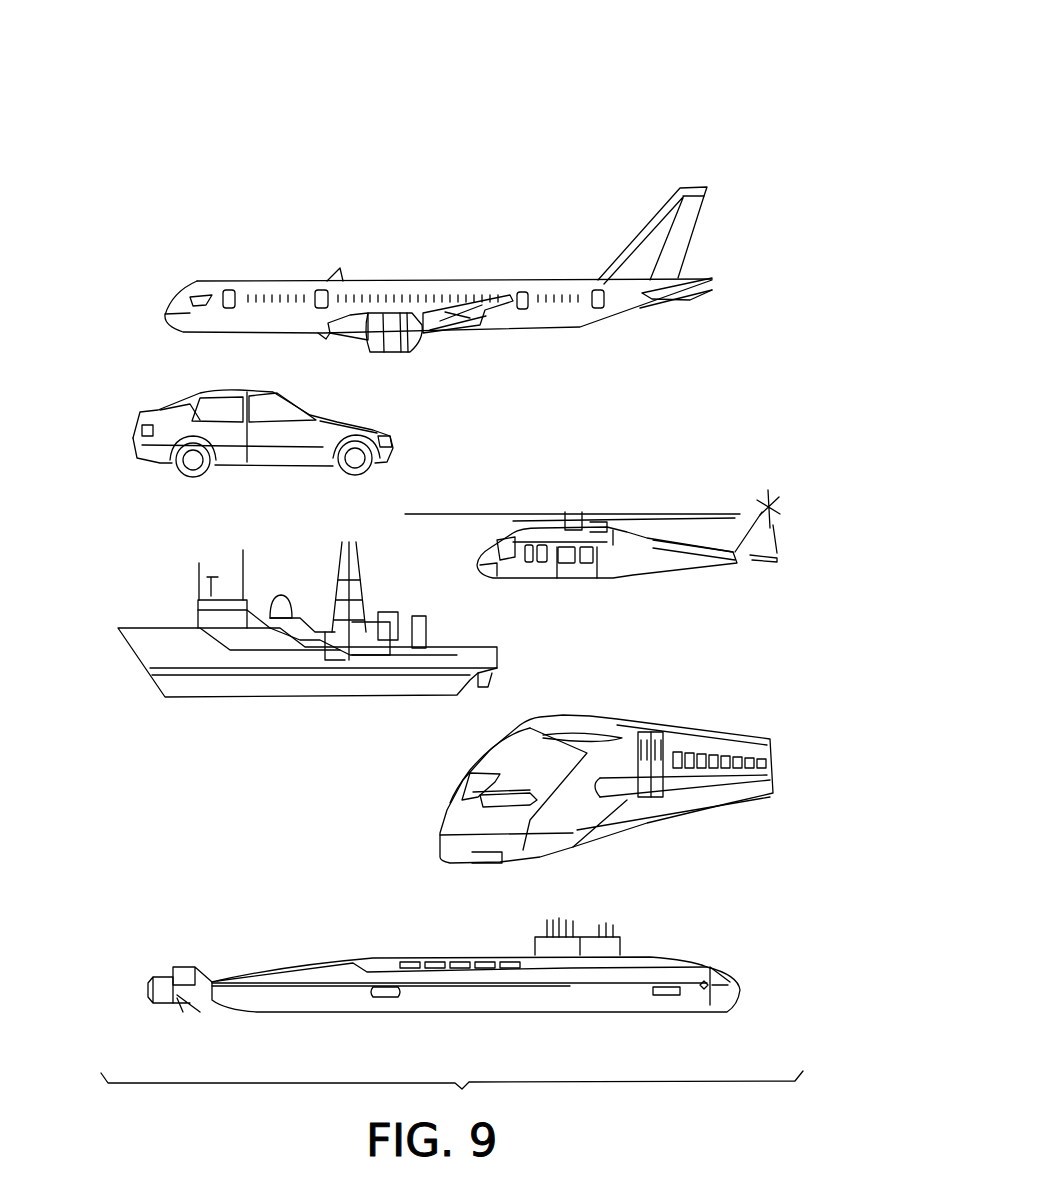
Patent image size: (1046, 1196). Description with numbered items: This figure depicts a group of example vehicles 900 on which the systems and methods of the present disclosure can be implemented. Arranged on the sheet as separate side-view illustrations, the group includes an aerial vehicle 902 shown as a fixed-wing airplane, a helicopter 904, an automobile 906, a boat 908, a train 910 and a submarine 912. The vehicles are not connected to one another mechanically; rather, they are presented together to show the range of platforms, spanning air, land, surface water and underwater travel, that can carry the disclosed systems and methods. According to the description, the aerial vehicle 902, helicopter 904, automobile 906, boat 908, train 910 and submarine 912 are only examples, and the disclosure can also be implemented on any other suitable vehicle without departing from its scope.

The example vehicles 900 is at (602, 86).
The aerial vehicle 902 is at (170, 282).
The helicopter 904 is at (730, 584).
The automobile 906 is at (120, 437).
The boat 908 is at (104, 651).
The train 910 is at (742, 816).
The submarine 912 is at (150, 961).